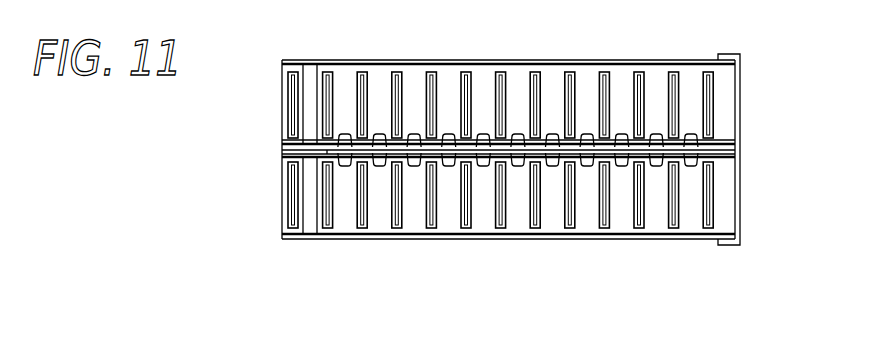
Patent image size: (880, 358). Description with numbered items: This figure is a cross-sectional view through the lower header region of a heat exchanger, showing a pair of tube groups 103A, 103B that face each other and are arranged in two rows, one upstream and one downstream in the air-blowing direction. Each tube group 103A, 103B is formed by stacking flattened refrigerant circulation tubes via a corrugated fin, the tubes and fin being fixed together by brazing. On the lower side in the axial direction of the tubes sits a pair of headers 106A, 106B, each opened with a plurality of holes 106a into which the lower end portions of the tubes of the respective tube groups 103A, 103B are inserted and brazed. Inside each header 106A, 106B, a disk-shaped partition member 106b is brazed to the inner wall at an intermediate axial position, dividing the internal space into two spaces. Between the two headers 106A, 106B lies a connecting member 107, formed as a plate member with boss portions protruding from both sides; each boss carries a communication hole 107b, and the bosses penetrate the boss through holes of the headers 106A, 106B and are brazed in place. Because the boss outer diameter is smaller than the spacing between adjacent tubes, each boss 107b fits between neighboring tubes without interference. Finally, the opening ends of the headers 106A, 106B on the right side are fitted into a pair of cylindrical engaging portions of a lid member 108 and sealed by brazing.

The partition member 106b is at (313, 86).
The holes 106a is at (475, 82).
The tube group 103B is at (540, 82).
The header 106B is at (645, 58).
The lid member 108 is at (742, 105).
The connecting member 107 is at (676, 166).
The communication hole 107b is at (347, 163).
The tube group 103A is at (537, 210).
The header 106A is at (650, 236).